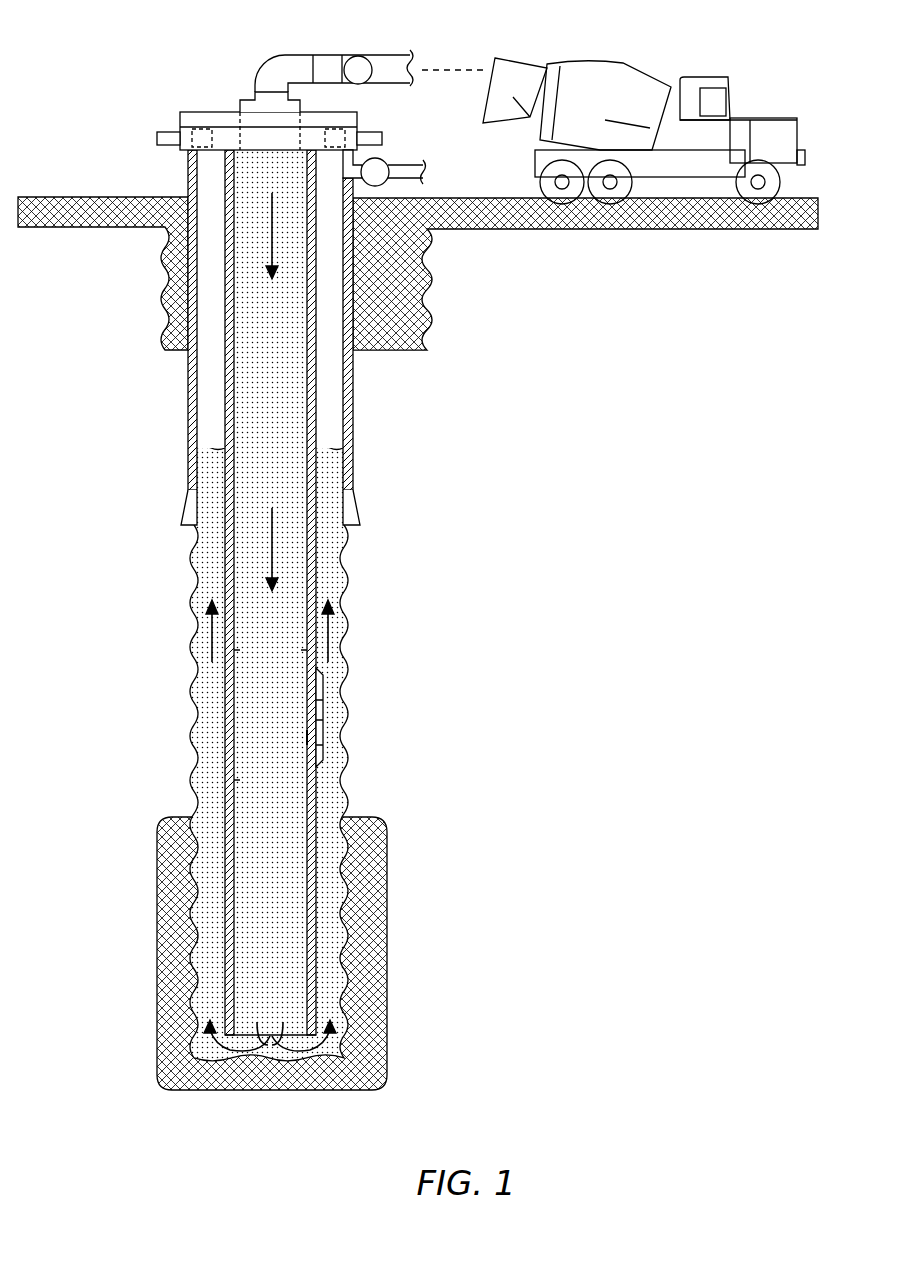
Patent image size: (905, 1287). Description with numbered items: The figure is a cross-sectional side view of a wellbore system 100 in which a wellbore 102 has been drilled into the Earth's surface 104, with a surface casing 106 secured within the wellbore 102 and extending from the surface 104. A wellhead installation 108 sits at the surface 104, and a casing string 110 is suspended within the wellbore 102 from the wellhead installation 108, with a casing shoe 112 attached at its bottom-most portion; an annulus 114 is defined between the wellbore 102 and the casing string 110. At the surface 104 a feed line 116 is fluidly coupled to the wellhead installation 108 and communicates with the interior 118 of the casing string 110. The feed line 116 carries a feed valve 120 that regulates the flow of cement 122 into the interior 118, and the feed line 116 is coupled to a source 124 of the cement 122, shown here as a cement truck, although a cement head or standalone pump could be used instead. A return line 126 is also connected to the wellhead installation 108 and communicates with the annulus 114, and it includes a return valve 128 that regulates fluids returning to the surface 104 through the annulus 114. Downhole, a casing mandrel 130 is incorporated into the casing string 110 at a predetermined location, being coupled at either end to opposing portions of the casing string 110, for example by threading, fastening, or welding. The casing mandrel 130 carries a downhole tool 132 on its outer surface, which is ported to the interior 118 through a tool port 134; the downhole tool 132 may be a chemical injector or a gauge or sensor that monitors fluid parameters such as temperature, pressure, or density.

The wellbore system 100 is at (100, 290).
The wellbore 102 is at (207, 580).
The Earth's surface 104 is at (102, 197).
The surface casing 106 is at (352, 420).
The wellhead installation 108 is at (178, 127).
The casing string 110 is at (317, 573).
The casing shoe 112 is at (297, 1040).
The annulus 114 is at (210, 393).
The feed line 116 is at (285, 63).
The interior of the casing string 118 is at (248, 488).
The feed valve 120 is at (364, 72).
The cement 122 is at (283, 300).
The source of cement 124 is at (727, 93).
The return line 126 is at (352, 172).
The return valve 128 is at (380, 156).
The casing mandrel 130 is at (225, 762).
The downhole tool 132 is at (325, 690).
The tool port 134 is at (307, 738).